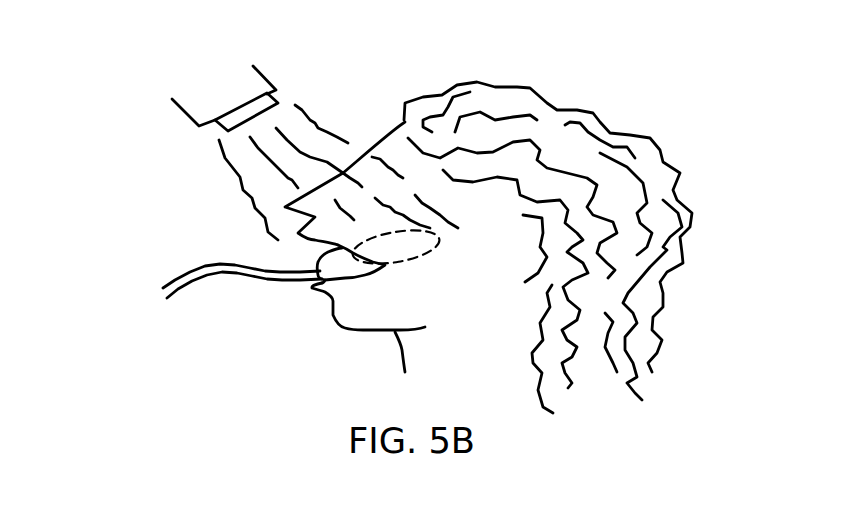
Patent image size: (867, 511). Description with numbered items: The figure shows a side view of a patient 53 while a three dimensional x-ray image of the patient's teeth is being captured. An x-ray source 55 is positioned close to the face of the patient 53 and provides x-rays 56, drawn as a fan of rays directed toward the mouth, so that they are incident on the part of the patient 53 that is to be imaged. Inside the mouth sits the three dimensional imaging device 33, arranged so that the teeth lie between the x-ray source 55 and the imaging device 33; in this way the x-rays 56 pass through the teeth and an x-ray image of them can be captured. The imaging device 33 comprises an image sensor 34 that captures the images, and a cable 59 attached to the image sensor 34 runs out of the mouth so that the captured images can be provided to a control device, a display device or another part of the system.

The three dimensional imaging device 33 is at (350, 258).
The image sensor 34 is at (345, 272).
The patient 53 is at (682, 175).
The x-ray source 55 is at (172, 113).
The x-rays 56 is at (212, 182).
The cable 59 is at (192, 288).